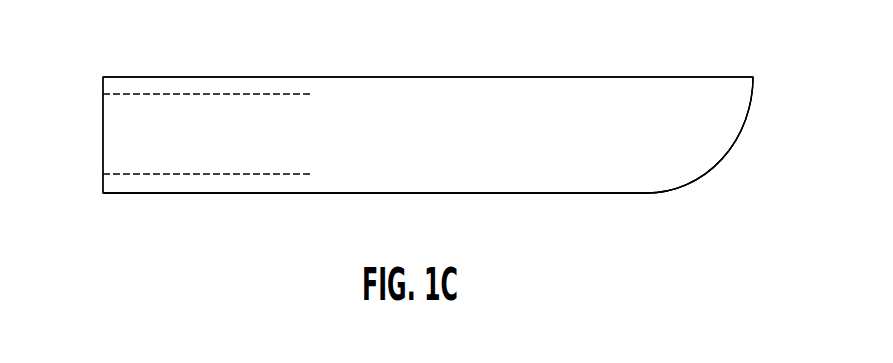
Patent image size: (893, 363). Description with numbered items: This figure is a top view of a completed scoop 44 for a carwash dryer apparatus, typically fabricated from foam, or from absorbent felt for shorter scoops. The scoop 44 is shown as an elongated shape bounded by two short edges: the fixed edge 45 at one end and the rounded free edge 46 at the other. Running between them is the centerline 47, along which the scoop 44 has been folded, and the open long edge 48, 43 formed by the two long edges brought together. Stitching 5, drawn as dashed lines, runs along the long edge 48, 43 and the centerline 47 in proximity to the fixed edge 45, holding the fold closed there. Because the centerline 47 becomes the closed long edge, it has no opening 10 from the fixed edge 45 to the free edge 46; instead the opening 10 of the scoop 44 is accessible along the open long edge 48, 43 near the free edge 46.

The opening 10 is at (421, 128).
The stitching 5 is at (200, 93).
The long edge 43 is at (375, 220).
The scoop 44 is at (610, 88).
The fixed edge 45 is at (103, 98).
The free edge 46 is at (737, 139).
The centerline 47 is at (380, 77).
The long edge 48 is at (366, 193).